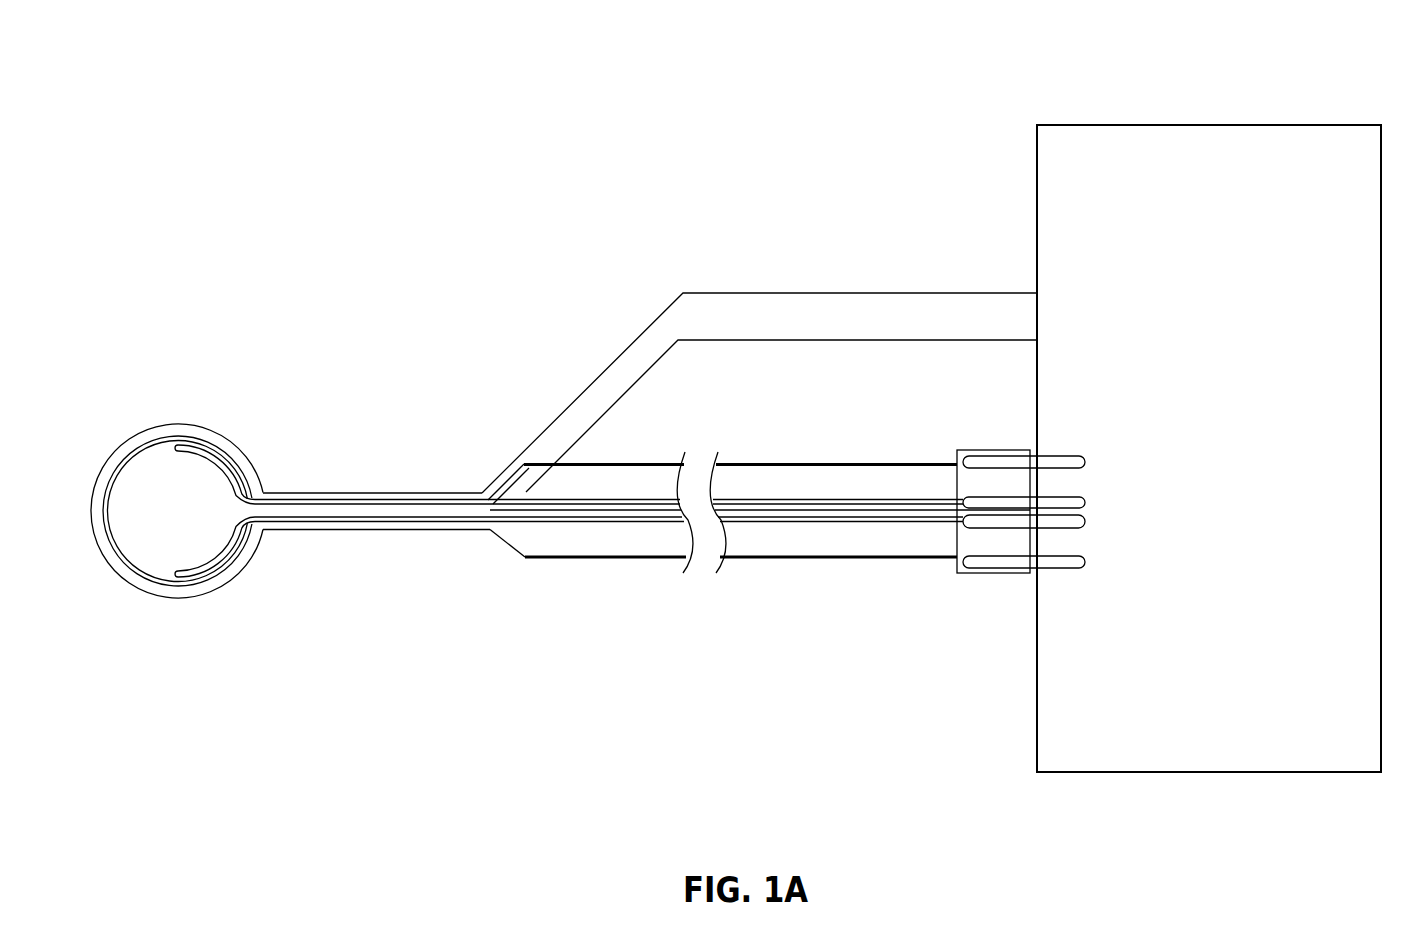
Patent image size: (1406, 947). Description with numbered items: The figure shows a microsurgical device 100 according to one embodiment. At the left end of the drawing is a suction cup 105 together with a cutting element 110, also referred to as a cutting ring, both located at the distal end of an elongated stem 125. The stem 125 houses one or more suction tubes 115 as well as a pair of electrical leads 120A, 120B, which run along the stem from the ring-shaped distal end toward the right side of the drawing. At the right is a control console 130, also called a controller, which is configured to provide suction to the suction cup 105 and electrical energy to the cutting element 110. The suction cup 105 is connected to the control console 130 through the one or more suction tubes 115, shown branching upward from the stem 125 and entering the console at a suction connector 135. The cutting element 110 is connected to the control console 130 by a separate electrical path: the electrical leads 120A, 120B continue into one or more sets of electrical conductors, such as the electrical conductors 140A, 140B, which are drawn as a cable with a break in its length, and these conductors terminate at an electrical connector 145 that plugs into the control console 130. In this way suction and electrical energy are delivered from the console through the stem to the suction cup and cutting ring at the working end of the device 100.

The device 100 is at (145, 47).
The suction cup 105 is at (117, 447).
The cutting element 110 is at (113, 559).
The suction tubes 115 is at (663, 314).
The electrical lead 120A is at (322, 498).
The electrical lead 120B is at (325, 518).
The stem 125 is at (423, 462).
The control console 130 is at (1087, 125).
The suction connector 135 is at (1024, 275).
The electrical conductor 140A is at (757, 527).
The electrical conductor 140B is at (528, 560).
The electrical connector 145 is at (1012, 602).